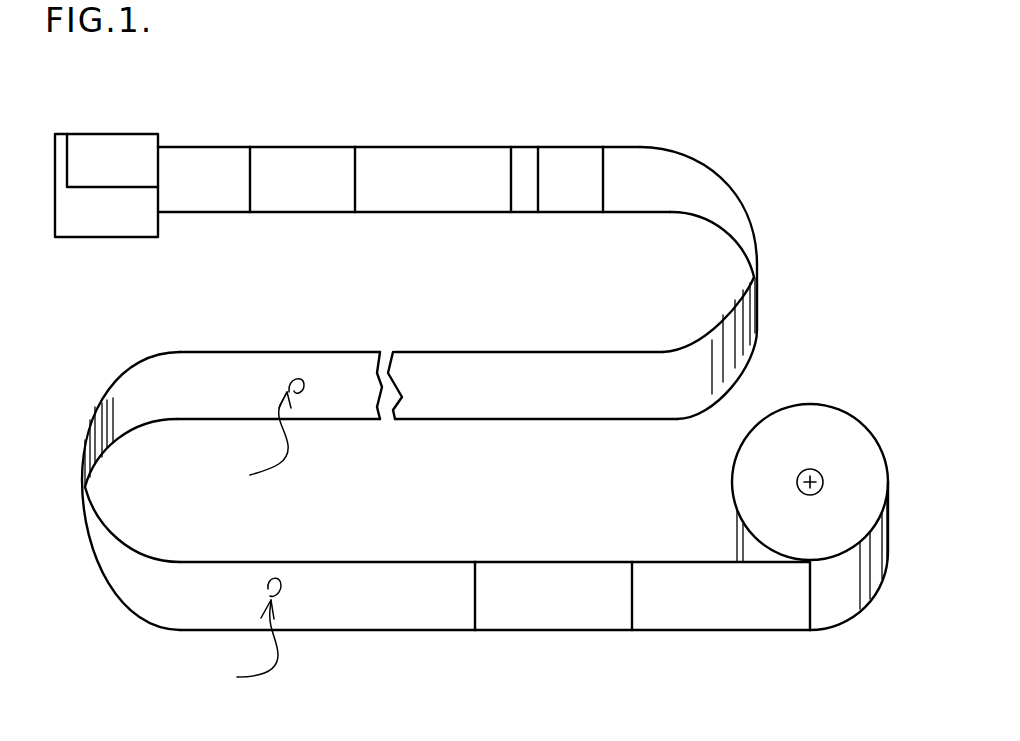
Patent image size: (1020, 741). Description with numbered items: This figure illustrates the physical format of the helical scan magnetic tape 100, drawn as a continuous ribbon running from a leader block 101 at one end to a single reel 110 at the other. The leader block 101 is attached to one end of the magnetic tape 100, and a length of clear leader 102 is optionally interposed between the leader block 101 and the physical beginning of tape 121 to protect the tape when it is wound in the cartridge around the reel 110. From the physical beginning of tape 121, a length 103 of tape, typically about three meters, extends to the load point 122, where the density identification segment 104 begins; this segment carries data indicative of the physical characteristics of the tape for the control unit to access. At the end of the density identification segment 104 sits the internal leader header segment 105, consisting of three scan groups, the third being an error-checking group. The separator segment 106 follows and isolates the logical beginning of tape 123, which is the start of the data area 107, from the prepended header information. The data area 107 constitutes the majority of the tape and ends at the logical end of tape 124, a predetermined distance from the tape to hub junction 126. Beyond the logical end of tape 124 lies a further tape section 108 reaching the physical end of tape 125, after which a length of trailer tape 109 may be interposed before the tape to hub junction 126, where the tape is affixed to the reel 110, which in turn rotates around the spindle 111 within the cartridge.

The magnetic tape 100 is at (453, 420).
The leader block 101 is at (110, 134).
The clear leader 102 is at (187, 197).
The length of magnetic tape 103 is at (310, 198).
The density identification segment 104 is at (462, 197).
The internal leader header segment 105 is at (527, 205).
The separator segment 106 is at (555, 157).
The data area 107 is at (580, 387).
The tape section after logical EOT 108 is at (585, 607).
The trailer tape 109 is at (755, 607).
The single reel 110 is at (760, 442).
The spindle 111 is at (800, 488).
The physical beginning of tape 121 is at (250, 147).
The load point 122 is at (355, 147).
The logical beginning of tape 123 is at (603, 147).
The logical end of tape 124 is at (475, 562).
The physical end of tape 125 is at (632, 562).
The tape to hub junction 126 is at (808, 630).